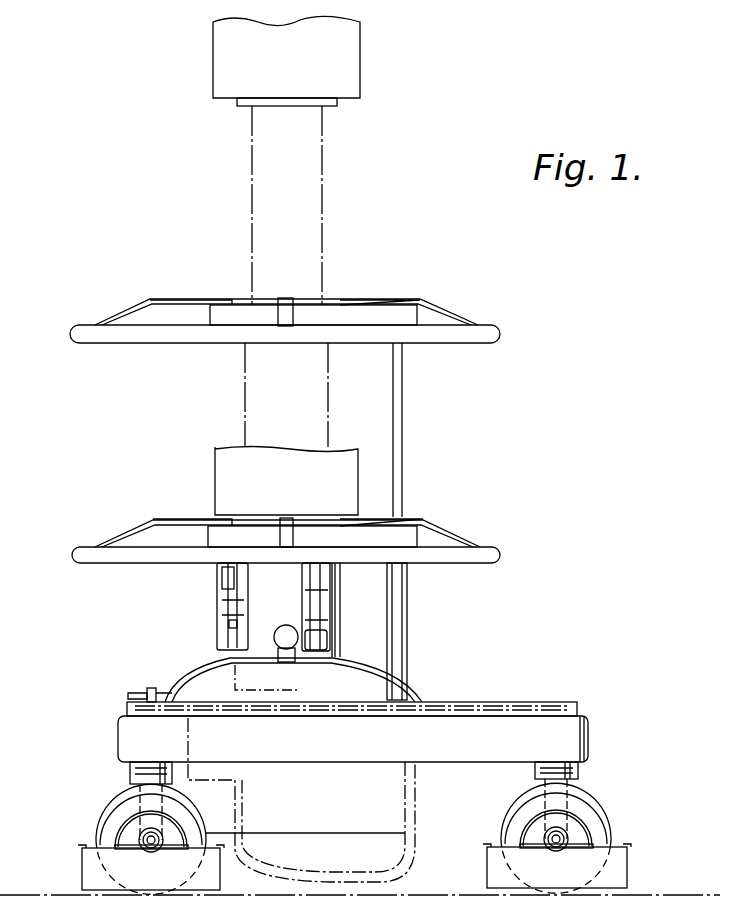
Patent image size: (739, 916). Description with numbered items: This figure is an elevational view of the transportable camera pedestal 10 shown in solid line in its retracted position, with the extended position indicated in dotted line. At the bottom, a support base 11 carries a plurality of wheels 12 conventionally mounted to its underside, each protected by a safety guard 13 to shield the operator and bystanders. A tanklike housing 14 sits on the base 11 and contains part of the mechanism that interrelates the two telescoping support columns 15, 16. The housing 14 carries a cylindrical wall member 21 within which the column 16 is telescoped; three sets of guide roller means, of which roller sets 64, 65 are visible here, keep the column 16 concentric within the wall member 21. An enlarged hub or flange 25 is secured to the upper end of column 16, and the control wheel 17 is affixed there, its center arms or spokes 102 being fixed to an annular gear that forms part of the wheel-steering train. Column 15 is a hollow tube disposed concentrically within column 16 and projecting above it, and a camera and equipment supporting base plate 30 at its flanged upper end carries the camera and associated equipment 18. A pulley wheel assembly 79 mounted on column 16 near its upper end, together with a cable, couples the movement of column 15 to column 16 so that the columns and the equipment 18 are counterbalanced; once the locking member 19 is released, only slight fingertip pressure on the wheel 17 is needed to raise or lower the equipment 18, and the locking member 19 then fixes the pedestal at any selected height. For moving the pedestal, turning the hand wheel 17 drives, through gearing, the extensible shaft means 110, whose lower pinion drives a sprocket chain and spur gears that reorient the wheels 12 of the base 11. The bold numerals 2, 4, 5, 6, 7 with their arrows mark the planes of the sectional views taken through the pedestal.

The camera pedestal 10 is at (604, 541).
The support base 11 is at (590, 733).
The wheels 12 is at (96, 830).
The safety guards 13 is at (82, 877).
The housing 14 is at (193, 678).
The support column 15 is at (252, 188).
The support column 16 is at (245, 372).
The control wheel 17 is at (500, 330).
The camera and associated equipment 18 is at (360, 50).
The locking member 19 is at (286, 656).
The cylindrical wall member 21 is at (368, 598).
The hub or flange 25 is at (418, 313).
The camera and equipment supporting base plate 30 is at (340, 101).
The guide roller means set 64 is at (216, 578).
The guide roller means set 65 is at (370, 635).
The pulley wheel assembly 79 is at (222, 588).
The center arms or spokes 102 is at (175, 298).
The extensible shaft means 110 is at (403, 432).
The section line 2- 2 is at (287, 455).
The section line 4- 4 is at (60, 505).
The section line 5- 5 is at (98, 800).
The section line 6- 6 is at (123, 526).
The section line 7- 7 is at (100, 707).